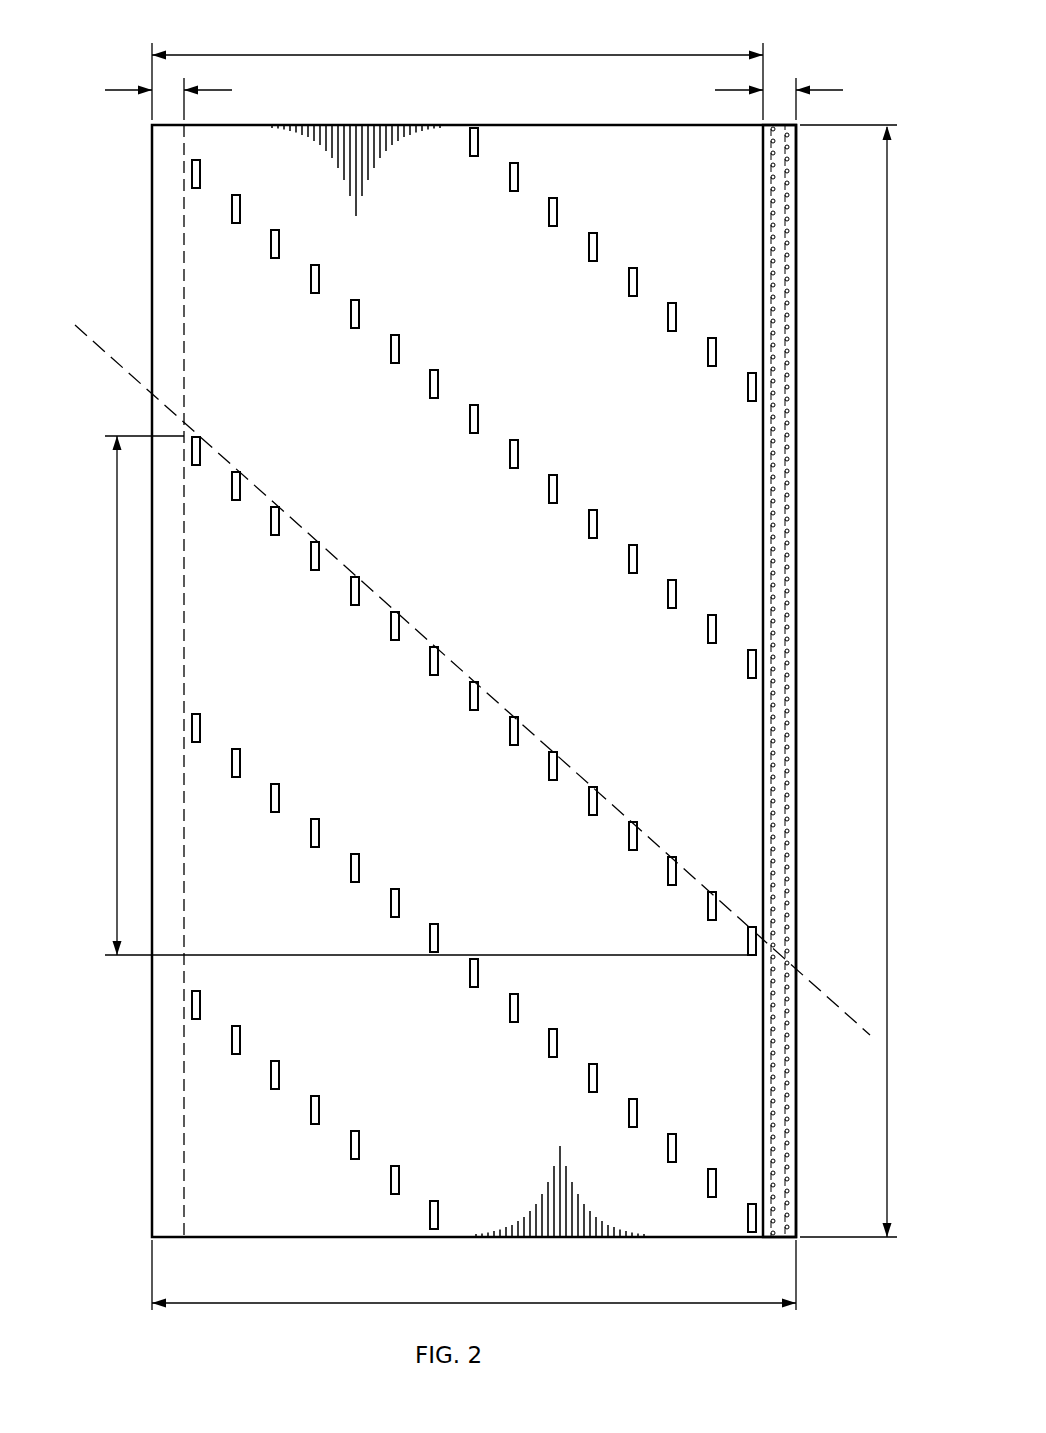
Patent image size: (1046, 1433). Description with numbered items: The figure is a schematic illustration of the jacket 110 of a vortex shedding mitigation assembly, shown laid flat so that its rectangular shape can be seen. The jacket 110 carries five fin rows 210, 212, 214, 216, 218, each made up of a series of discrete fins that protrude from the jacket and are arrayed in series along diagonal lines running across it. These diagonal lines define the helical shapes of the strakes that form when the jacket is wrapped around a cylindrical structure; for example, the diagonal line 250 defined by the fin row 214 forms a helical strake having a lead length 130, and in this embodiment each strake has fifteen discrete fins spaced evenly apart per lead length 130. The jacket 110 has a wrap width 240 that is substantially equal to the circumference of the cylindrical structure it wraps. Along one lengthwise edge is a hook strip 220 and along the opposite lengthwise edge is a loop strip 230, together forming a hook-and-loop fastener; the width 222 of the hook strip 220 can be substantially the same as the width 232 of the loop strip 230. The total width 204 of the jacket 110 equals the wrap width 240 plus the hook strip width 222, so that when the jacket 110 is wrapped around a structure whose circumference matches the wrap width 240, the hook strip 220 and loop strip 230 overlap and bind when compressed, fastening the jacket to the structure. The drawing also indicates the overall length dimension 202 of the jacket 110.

The jacket 110 is at (138, 202).
The lead length 130 is at (118, 695).
The plate height 202 is at (888, 682).
The total width 204 is at (472, 1302).
The fin row 210 is at (642, 262).
The fin row 212 is at (482, 390).
The fin row 214 is at (442, 632).
The fin row 216 is at (442, 907).
The fin row 218 is at (282, 1047).
The hook strip 220 is at (790, 190).
The hook strip width 222 is at (826, 89).
The loop strip 230 is at (187, 338).
The loop strip width 232 is at (115, 88).
The wrap width 240 is at (404, 52).
The diagonal line 250 is at (828, 992).